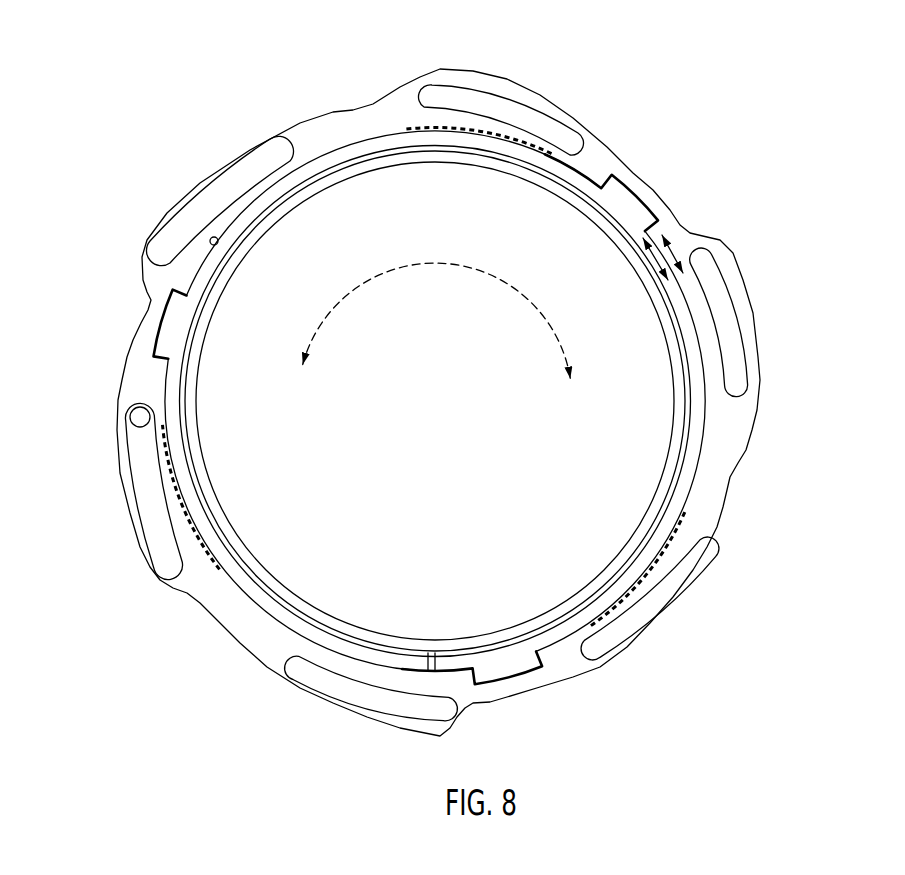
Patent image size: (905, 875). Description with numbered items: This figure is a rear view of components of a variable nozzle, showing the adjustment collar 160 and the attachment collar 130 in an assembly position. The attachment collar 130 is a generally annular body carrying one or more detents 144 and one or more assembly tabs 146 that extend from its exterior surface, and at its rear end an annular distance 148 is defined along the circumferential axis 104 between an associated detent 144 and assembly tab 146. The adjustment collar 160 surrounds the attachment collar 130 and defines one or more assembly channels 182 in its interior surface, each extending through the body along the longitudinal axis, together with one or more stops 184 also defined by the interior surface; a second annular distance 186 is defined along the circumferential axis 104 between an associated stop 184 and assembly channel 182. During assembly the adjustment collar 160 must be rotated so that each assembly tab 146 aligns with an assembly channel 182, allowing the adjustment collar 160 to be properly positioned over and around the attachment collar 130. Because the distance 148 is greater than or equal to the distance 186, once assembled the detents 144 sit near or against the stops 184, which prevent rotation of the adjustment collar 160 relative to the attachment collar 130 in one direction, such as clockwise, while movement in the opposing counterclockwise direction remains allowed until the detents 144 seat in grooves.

The adjustment collar 160 is at (375, 122).
The attachment collar 130 is at (394, 158).
The detent 144 is at (229, 249).
The assembly tab 146 is at (181, 322).
The distance 148 is at (657, 262).
The assembly channel 182 is at (160, 301).
The stop 184 is at (200, 252).
The distance 186 is at (671, 250).
The circumferential axis 104 is at (480, 270).